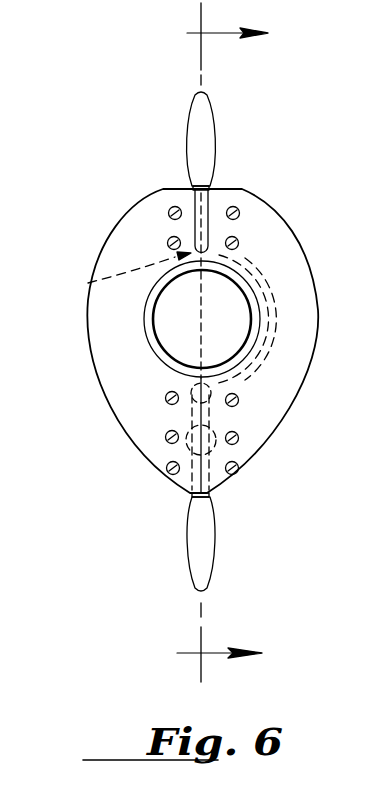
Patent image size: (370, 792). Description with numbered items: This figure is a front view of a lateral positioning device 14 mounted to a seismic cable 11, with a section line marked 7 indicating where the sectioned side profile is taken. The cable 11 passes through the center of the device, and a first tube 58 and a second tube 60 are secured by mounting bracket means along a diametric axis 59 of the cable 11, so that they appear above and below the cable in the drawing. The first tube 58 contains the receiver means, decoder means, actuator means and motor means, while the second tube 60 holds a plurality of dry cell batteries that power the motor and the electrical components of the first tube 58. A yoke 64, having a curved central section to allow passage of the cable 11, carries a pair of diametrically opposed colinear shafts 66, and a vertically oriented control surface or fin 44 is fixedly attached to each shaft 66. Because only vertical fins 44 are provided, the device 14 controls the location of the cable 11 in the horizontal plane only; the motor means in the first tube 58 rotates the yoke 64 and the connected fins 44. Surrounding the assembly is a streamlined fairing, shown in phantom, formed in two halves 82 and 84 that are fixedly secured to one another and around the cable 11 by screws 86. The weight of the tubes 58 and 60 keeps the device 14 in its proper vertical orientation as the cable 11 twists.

The lateral positioning device 14 is at (115, 217).
The section line 7- 7 is at (235, 345).
The fin 44 is at (203, 133).
The diametric axis 59 is at (200, 318).
The seismic cable 11 is at (253, 297).
The yoke 64 is at (88, 284).
The screws 86 is at (239, 243).
The shaft 66 is at (194, 200).
The first tube 58 is at (190, 398).
The second tube 60 is at (187, 449).
The fairing half 82 is at (147, 378).
The fairing half 84 is at (304, 378).